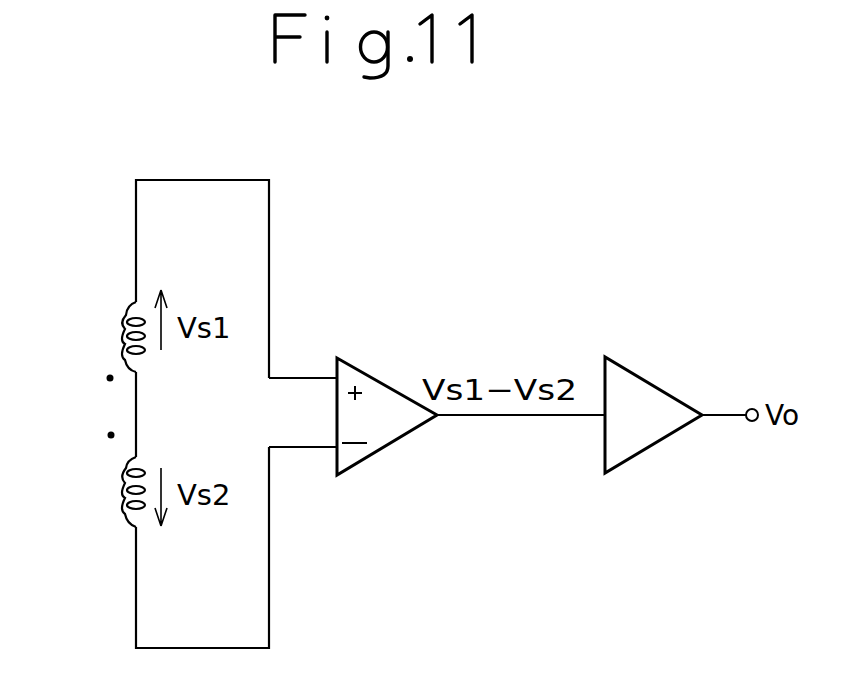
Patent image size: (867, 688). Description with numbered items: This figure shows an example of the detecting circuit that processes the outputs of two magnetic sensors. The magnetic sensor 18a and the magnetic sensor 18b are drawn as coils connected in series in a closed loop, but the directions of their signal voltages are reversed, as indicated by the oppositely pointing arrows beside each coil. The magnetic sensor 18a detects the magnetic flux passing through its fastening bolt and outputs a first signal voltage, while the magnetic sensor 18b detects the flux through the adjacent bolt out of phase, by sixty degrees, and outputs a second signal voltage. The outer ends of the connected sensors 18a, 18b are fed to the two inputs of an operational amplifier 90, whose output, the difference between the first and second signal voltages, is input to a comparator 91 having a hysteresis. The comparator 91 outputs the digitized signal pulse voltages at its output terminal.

The magnetic sensor 18a is at (127, 345).
The magnetic sensor 18b is at (127, 479).
The operational amplifier 90 is at (372, 378).
The comparator 91 is at (660, 387).